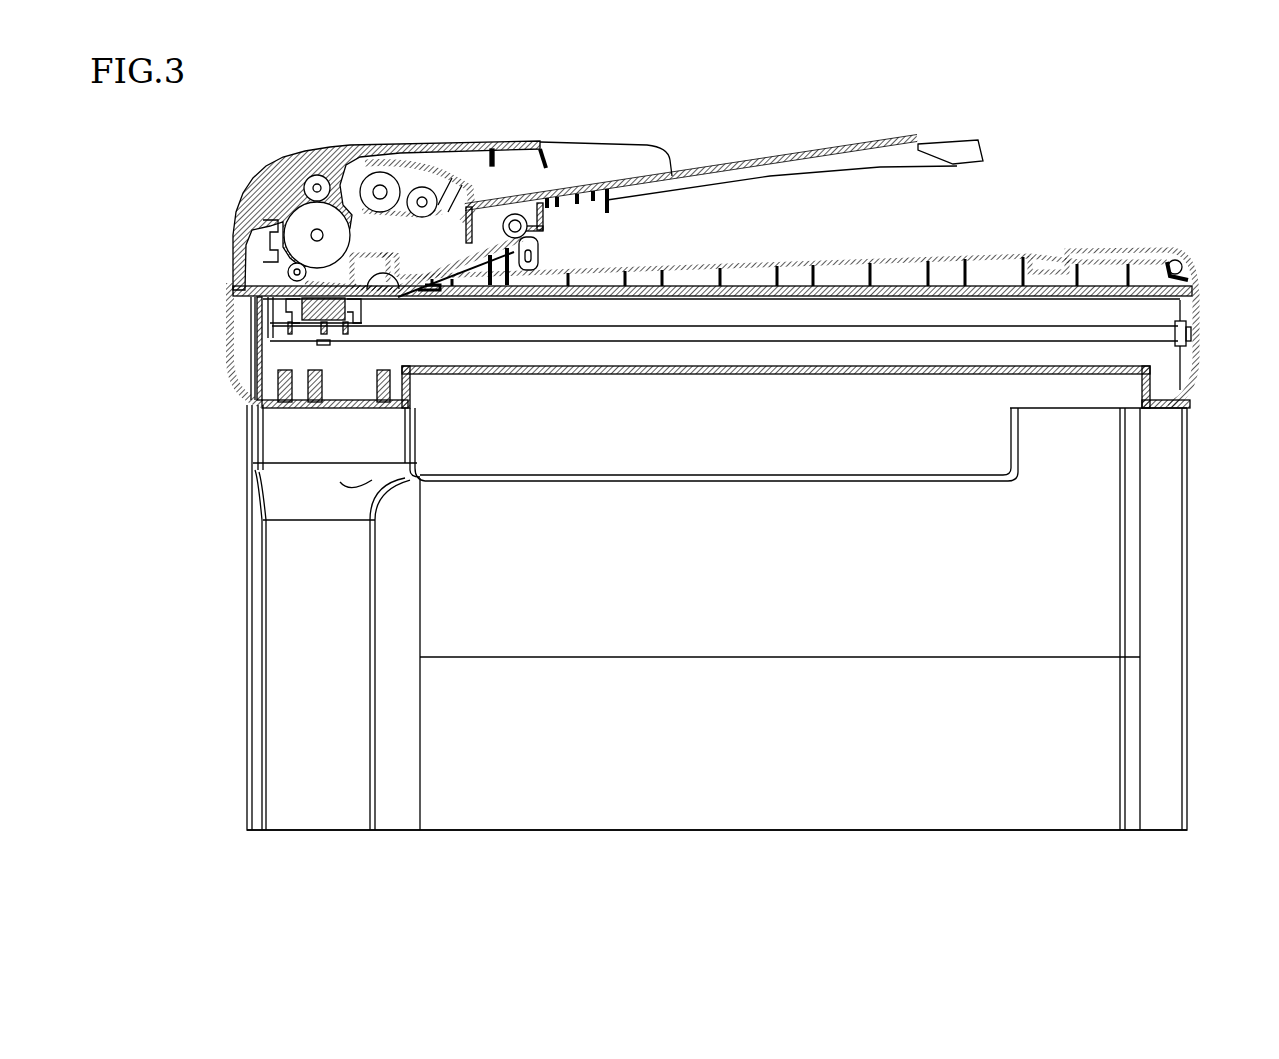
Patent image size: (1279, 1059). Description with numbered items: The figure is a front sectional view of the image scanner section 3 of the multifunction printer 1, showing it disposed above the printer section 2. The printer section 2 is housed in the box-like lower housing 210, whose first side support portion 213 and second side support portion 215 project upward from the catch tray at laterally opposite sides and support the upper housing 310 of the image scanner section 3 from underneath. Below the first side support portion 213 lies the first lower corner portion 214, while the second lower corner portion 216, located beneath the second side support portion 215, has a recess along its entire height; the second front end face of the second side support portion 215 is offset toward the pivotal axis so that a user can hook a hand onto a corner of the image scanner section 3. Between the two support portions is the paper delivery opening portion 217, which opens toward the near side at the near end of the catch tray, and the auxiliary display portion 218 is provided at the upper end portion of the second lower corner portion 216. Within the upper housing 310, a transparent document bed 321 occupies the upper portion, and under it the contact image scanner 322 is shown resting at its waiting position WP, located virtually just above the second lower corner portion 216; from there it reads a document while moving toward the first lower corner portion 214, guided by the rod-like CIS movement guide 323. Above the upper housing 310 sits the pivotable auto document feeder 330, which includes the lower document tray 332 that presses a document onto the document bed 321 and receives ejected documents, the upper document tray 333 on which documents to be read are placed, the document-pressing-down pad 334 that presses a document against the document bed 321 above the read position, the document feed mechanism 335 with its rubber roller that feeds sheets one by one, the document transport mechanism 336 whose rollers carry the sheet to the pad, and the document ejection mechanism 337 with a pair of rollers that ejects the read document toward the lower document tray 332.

The multifunction printer 1 is at (1206, 90).
The printer section 2 is at (1183, 514).
The image scanner section 3 is at (1183, 249).
The lower housing 210 is at (245, 628).
The first side support portion 213 is at (1025, 437).
The first lower corner portion 214 is at (1130, 620).
The second side support portion 215 is at (403, 434).
The second lower corner portion 216 is at (297, 728).
The paper delivery opening portion 217 is at (838, 476).
The auxiliary display portion 218 is at (340, 483).
The upper housing 310 is at (1191, 335).
The document bed 321 is at (1005, 297).
The contact image scanner (CIS) 322 is at (310, 335).
The CIS movement guide 323 is at (737, 328).
The auto document feeder (ADF) 330 is at (262, 169).
The lower document tray 332 is at (1190, 281).
The upper document tray 333 is at (937, 150).
The document-pressing-down pad 334 is at (431, 293).
The document feed mechanism 335 is at (405, 165).
The document transport mechanism 336 is at (296, 236).
The document ejection mechanism 337 is at (541, 240).
The waiting position WP is at (326, 349).